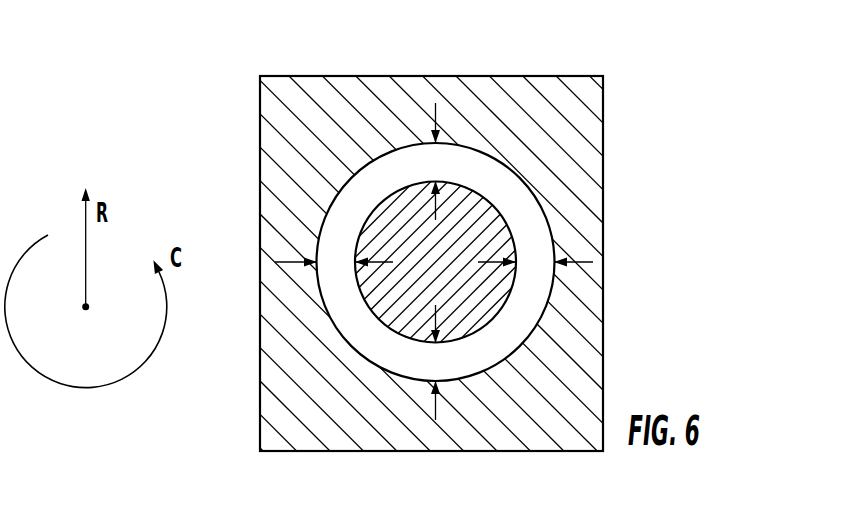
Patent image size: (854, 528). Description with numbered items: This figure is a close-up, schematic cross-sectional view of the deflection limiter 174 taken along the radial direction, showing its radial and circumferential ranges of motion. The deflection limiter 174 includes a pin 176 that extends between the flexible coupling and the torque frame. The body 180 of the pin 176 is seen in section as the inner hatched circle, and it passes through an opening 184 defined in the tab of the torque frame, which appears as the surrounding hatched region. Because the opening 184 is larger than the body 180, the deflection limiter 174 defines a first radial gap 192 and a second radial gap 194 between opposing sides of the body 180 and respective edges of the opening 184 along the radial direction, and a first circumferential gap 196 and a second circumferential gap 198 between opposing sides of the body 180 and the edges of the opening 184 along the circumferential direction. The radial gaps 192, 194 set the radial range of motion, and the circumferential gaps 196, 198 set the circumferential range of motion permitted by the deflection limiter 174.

The deflection limiter 174 is at (736, 168).
The pin 176 is at (513, 263).
The body 180 is at (485, 293).
The opening 184 is at (532, 188).
The first radial gap 192 is at (437, 116).
The second radial gap 194 is at (436, 408).
The first circumferential gap 196 is at (583, 262).
The second circumferential gap 198 is at (285, 260).